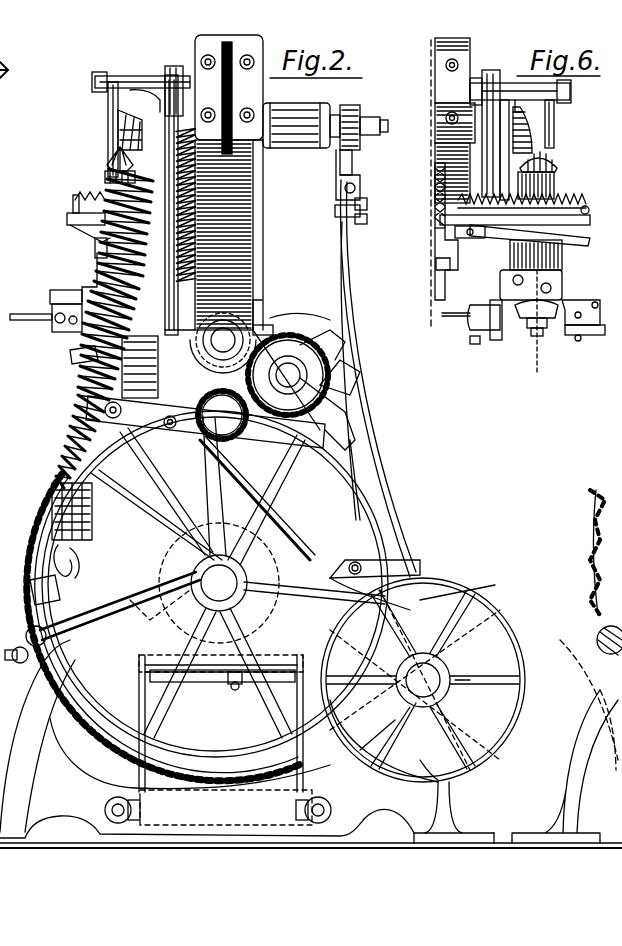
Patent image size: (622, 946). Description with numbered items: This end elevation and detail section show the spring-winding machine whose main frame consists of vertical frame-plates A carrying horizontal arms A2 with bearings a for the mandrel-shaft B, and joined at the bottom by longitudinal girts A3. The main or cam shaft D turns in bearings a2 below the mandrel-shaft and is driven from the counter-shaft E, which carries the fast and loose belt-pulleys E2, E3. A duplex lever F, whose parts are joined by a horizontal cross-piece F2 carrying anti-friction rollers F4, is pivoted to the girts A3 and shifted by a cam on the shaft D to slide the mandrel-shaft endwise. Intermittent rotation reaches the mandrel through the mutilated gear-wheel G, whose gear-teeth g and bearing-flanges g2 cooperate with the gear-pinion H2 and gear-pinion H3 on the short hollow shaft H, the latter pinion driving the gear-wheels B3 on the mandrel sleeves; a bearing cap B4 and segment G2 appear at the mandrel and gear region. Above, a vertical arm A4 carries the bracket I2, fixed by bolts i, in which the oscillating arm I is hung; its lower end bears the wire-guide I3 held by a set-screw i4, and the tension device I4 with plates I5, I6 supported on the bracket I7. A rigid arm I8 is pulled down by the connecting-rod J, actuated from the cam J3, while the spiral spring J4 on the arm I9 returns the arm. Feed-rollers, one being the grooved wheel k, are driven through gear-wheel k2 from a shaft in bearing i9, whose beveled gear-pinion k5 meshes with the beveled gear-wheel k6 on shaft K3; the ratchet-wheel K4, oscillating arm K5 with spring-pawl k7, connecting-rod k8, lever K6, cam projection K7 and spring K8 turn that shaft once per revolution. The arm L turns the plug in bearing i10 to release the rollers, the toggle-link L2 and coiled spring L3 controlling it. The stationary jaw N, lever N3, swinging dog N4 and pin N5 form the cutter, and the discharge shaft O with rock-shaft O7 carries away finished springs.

In FIG. 2, the frame-plates A is at (309, 511).
In FIG. 2, the horizontal arms A2 is at (262, 312).
In FIG. 6, the horizontal arms A2 is at (436, 180).
In FIG. 2, the longitudinal girts A3 is at (140, 810).
In FIG. 2, the vertical arm A4 is at (229, 94).
In FIG. 6, the vertical arm A4 is at (470, 44).
In FIG. 2, the mandrel-shaft B is at (223, 340).
In FIG. 2, the gear-wheels B3 is at (217, 406).
In FIG. 2, the bearing cap B4 is at (256, 305).
In FIG. 2, the main or cam shaft D is at (215, 584).
In FIG. 2, the counter-shaft E is at (423, 680).
In FIG. 2, the fast belt-pulley E2 is at (484, 678).
In FIG. 2, the loose belt-pulley E3 is at (480, 633).
In FIG. 2, the lever F is at (297, 715).
In FIG. 2, the horizontal cross-piece F2 is at (172, 672).
In FIG. 2, the anti-friction rollers F4 is at (235, 672).
In FIG. 2, the mutilated gear-wheel G is at (58, 478).
In FIG. 2, the gear segment G2 is at (598, 536).
In FIG. 2, the gear-teeth g is at (42, 505).
In FIG. 2, the bearing-flanges g2 is at (362, 455).
In FIG. 2, the short hollow shaft H is at (288, 375).
In FIG. 2, the gear-pinion H2 is at (318, 345).
In FIG. 2, the gear-pinion H3 is at (300, 310).
In FIG. 2, the oscillating arm I is at (164, 205).
In FIG. 6, the oscillating arm I is at (596, 224).
In FIG. 6, the bracket I2 is at (440, 118).
In FIG. 2, the wire-guide I3 is at (160, 470).
In FIG. 6, the wire-guide I3 is at (470, 310).
In FIG. 2, the tension device I4 is at (68, 290).
In FIG. 6, the tension device I4 is at (581, 305).
In FIG. 2, the tension plate I5 is at (40, 314).
In FIG. 6, the tension plate I5 is at (584, 343).
In FIG. 2, the tension plate I6 is at (52, 322).
In FIG. 2, the arm or bracket I7 is at (97, 270).
In FIG. 6, the arm or bracket I7 is at (566, 283).
In FIG. 2, the rigid arm I8 is at (172, 72).
In FIG. 6, the rigid arm I8 is at (492, 72).
In FIG. 2, the arm I9 is at (160, 96).
In FIG. 6, the arm I9 is at (520, 95).
In FIG. 2, the bolts i is at (215, 60).
In FIG. 6, the bolts i is at (446, 66).
In FIG. 2, the set-screw i4 is at (73, 200).
In FIG. 6, the set-screw i4 is at (478, 344).
In FIG. 2, the bearing i9 is at (105, 178).
In FIG. 6, the bearing i9 is at (556, 184).
In FIG. 6, the elongated bearing i10 is at (562, 258).
In FIG. 2, the connecting-rod J is at (108, 120).
In FIG. 6, the connecting-rod J is at (555, 115).
In FIG. 2, the cam J3 is at (30, 585).
In FIG. 2, the spiral spring J4 is at (80, 356).
In FIG. 2, the shaft K3 is at (388, 128).
In FIG. 2, the ratchet-wheel K4 is at (350, 106).
In FIG. 2, the oscillating arm K5 is at (336, 180).
In FIG. 2, the vertically-arranged lever K6 is at (368, 594).
In FIG. 2, the cam projection K7 is at (412, 565).
In FIG. 2, the spring K8 is at (346, 290).
In FIG. 6, the grooved wheel k is at (520, 320).
In FIG. 2, the gear-wheel k2 is at (91, 247).
In FIG. 2, the beveled gear-pinion k5 is at (107, 158).
In FIG. 6, the beveled gear-pinion k5 is at (558, 162).
In FIG. 2, the beveled gear-wheel k6 is at (118, 128).
In FIG. 6, the beveled gear-wheel k6 is at (548, 130).
In FIG. 2, the spring-pawl k7 is at (352, 162).
In FIG. 2, the connecting-rod k8 is at (367, 208).
In FIG. 2, the arm L is at (67, 217).
In FIG. 6, the arm L is at (532, 239).
In FIG. 6, the toggle-link L2 is at (515, 245).
In FIG. 2, the coiled spring L3 is at (90, 189).
In FIG. 6, the coiled spring L3 is at (523, 195).
In FIG. 2, the stationary jaw N is at (107, 328).
In FIG. 2, the horizontal lever N3 is at (256, 292).
In FIG. 2, the swinging dog N4 is at (205, 420).
In FIG. 2, the pin N5 is at (196, 205).
In FIG. 2, the horizontal shaft O is at (178, 531).
In FIG. 2, the rock-shaft O7 is at (597, 640).
In FIG. 2, the bearings a is at (160, 605).
In FIG. 2, the bearings a2 is at (150, 592).